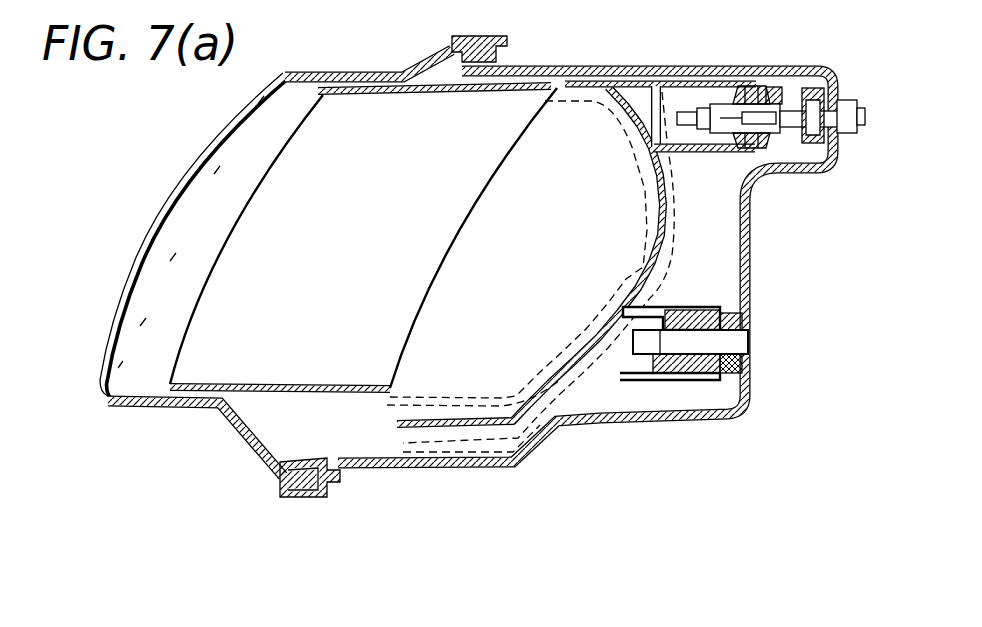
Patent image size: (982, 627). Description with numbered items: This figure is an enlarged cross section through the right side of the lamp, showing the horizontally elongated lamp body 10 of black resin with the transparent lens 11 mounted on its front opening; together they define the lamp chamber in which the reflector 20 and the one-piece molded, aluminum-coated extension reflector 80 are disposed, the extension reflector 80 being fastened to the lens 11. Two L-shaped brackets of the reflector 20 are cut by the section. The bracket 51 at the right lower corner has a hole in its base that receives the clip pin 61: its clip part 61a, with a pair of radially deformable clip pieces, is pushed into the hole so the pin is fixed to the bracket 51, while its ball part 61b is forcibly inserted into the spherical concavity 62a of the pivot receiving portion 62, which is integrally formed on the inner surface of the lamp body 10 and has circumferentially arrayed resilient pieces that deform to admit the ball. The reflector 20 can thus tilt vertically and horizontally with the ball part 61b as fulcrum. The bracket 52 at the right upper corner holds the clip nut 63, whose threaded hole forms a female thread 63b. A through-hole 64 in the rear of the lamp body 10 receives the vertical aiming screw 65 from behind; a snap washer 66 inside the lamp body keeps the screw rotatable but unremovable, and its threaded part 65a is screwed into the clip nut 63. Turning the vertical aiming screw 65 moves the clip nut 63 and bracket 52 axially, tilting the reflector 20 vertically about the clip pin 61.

The lamp body 10 is at (748, 400).
The lens 11 is at (112, 318).
The reflector 20 is at (657, 232).
The bracket 51 is at (613, 365).
The bracket 52 is at (670, 93).
The clip pin 61 is at (682, 306).
The clip part 61a is at (643, 380).
The ball part 61b is at (744, 314).
The pivot receiving portion 62 is at (745, 345).
The spherical concavity 62a is at (718, 373).
The clip nut 63 is at (768, 95).
The female thread 63b is at (773, 135).
The through-hole 64 is at (838, 92).
The vertical aiming screw 65 is at (803, 130).
The threaded part 65a is at (707, 110).
The snap washer 66 is at (804, 88).
The extension reflector 80 is at (327, 380).